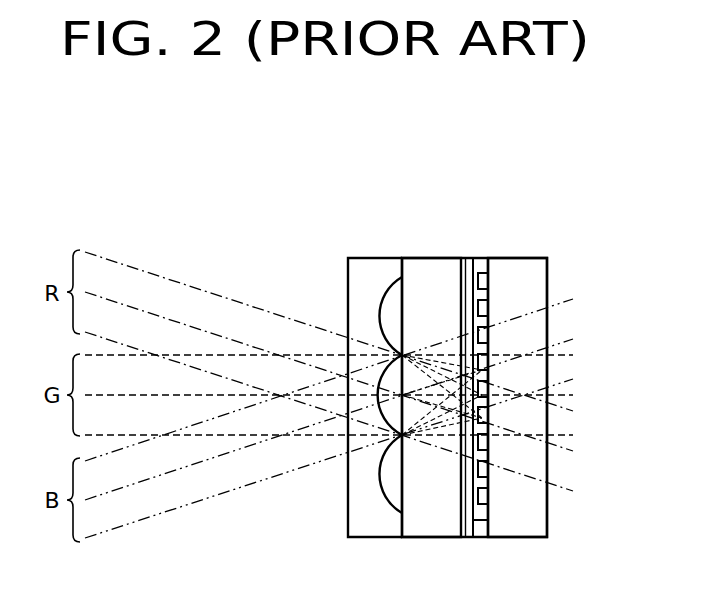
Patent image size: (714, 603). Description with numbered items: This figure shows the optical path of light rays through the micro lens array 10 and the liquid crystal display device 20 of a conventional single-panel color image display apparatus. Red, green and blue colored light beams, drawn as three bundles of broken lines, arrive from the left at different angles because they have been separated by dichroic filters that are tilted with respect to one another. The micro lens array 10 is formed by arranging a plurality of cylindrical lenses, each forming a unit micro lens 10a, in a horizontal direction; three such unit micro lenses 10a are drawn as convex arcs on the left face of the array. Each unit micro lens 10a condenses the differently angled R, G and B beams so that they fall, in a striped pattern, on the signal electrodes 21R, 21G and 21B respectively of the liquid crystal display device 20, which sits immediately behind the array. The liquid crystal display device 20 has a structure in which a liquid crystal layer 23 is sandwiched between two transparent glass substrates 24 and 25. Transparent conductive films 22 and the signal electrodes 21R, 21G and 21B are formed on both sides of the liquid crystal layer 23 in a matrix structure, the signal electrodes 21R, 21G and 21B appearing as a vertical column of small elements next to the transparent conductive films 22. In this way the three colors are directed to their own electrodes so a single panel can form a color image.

The micro lens array 10 is at (356, 538).
The unit micro lens 10a is at (379, 487).
The liquid crystal display device 20 is at (402, 541).
The signal electrode for blue light 21B is at (488, 283).
The signal electrode for green light 21G is at (488, 310).
The signal electrode for red light 21R is at (488, 337).
The transparent conductive film 22 is at (465, 258).
The liquid crystal layer 23 is at (481, 258).
The transparent glass substrate 24 is at (412, 262).
The transparent glass substrate 25 is at (527, 262).